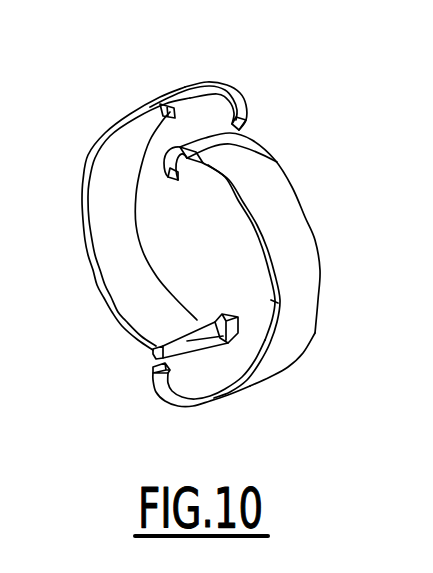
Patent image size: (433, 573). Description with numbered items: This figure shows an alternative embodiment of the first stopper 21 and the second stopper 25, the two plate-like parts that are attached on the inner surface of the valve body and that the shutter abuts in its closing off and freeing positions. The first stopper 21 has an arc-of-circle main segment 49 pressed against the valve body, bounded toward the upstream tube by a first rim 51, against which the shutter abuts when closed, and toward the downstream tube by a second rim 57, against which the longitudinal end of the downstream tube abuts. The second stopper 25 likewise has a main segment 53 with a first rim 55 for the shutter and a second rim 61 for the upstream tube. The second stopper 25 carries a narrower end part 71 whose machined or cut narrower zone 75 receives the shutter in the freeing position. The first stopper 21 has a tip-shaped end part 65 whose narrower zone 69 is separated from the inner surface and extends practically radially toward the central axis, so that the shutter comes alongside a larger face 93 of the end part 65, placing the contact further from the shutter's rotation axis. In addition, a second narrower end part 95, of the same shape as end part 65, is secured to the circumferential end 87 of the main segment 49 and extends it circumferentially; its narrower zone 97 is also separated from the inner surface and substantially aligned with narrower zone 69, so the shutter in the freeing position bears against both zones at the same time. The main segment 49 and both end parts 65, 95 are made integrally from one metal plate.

The first stopper 21 is at (350, 327).
The second stopper 25 is at (148, 72).
The main segment 49 is at (303, 240).
The first rim 51 is at (303, 347).
The main segment 53 is at (110, 221).
The first rim 55 is at (104, 285).
The second rim 57 is at (245, 386).
The second rim 61 is at (160, 136).
The end part 65 is at (298, 162).
The narrower zone 69 is at (165, 166).
The narrower end part 71 is at (214, 68).
The narrower zone 75 is at (246, 127).
The circumferential end 87 is at (210, 402).
The larger face 93 is at (243, 97).
The second narrower end part 95 is at (187, 322).
The narrower zone 97 is at (155, 372).